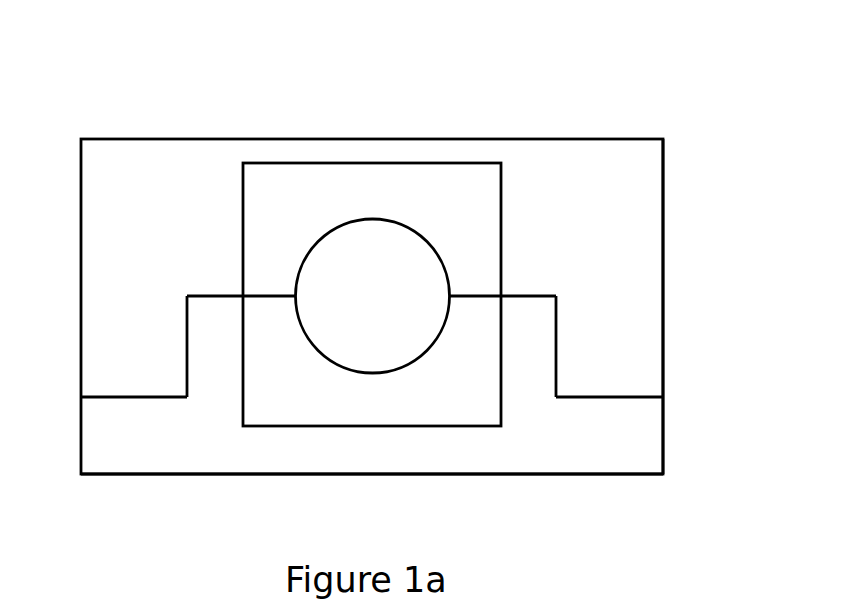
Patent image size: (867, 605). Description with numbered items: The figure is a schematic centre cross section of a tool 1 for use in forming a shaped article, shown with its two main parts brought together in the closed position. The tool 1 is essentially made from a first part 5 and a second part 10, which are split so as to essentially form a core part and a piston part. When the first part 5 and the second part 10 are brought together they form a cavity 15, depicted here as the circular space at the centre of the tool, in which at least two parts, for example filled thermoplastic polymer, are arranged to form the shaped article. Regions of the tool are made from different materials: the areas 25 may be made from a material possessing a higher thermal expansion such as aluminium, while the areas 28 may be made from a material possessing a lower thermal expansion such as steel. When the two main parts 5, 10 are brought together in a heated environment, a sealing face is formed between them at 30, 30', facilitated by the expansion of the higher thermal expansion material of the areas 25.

The tool 1 is at (571, 108).
The first part 5 is at (617, 166).
The areas of lower thermal expansion material 28 is at (632, 247).
The second part 10 is at (615, 420).
The sealing face 30 is at (229, 418).
The sealing face 30' is at (524, 421).
The areas of higher thermal expansion material 25 is at (268, 353).
The cavity 15 is at (365, 263).